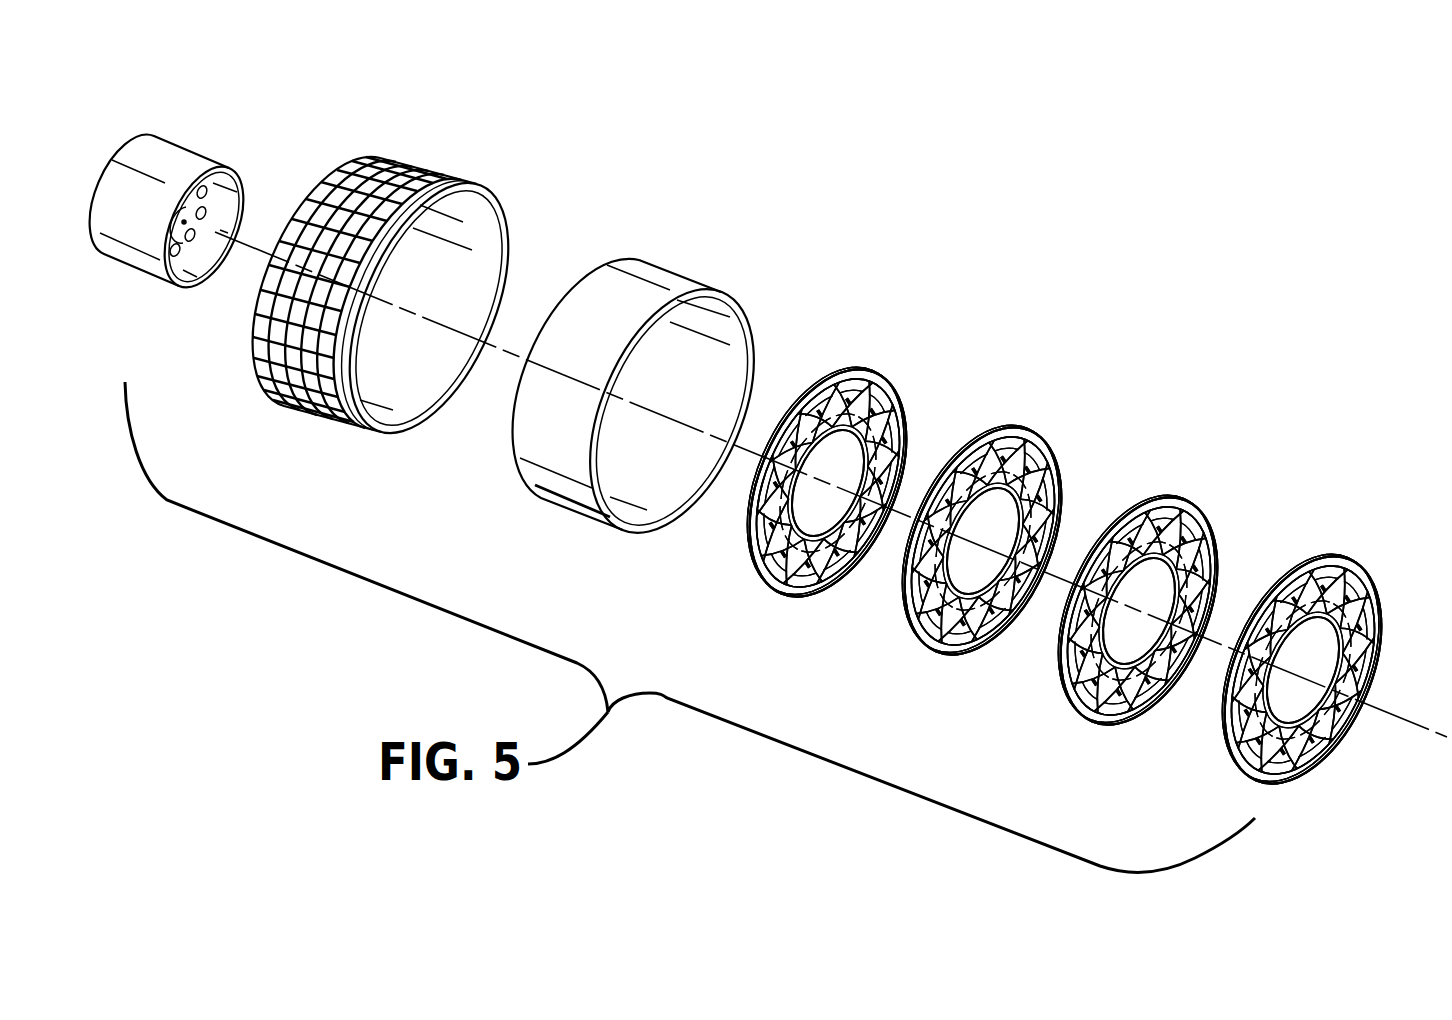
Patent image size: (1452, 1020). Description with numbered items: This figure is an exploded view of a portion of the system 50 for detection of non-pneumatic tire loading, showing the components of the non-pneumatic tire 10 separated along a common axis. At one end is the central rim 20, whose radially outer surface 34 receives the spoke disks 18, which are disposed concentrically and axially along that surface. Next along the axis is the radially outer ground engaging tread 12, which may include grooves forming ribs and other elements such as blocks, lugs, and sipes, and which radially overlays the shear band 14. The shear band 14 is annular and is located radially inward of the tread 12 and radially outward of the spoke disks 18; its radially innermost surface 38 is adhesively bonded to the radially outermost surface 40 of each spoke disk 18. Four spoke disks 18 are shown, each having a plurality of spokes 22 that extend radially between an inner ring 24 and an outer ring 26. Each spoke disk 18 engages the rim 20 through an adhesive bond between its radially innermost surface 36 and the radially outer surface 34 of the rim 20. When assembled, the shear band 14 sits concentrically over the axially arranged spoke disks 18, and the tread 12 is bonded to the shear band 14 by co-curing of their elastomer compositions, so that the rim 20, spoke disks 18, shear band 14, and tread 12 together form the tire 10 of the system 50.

The system for detection of non-pneumatic tire loading 50 is at (552, 93).
The outer surface of the rim 34 is at (204, 186).
The central rim 20 is at (230, 168).
The tread 12 is at (397, 173).
The non-pneumatic tire 10 is at (397, 300).
The shear band 14 is at (650, 390).
The radially innermost surface of the shear band 38 is at (670, 492).
The spokes 22 is at (877, 380).
The inner ring 24 is at (1053, 462).
The outer ring 26 is at (1183, 500).
The radially outermost surface of the spoke disk 40 is at (812, 395).
The radially innermost surface of the spoke disk 36 is at (870, 545).
The spoke disks 18 is at (775, 583).